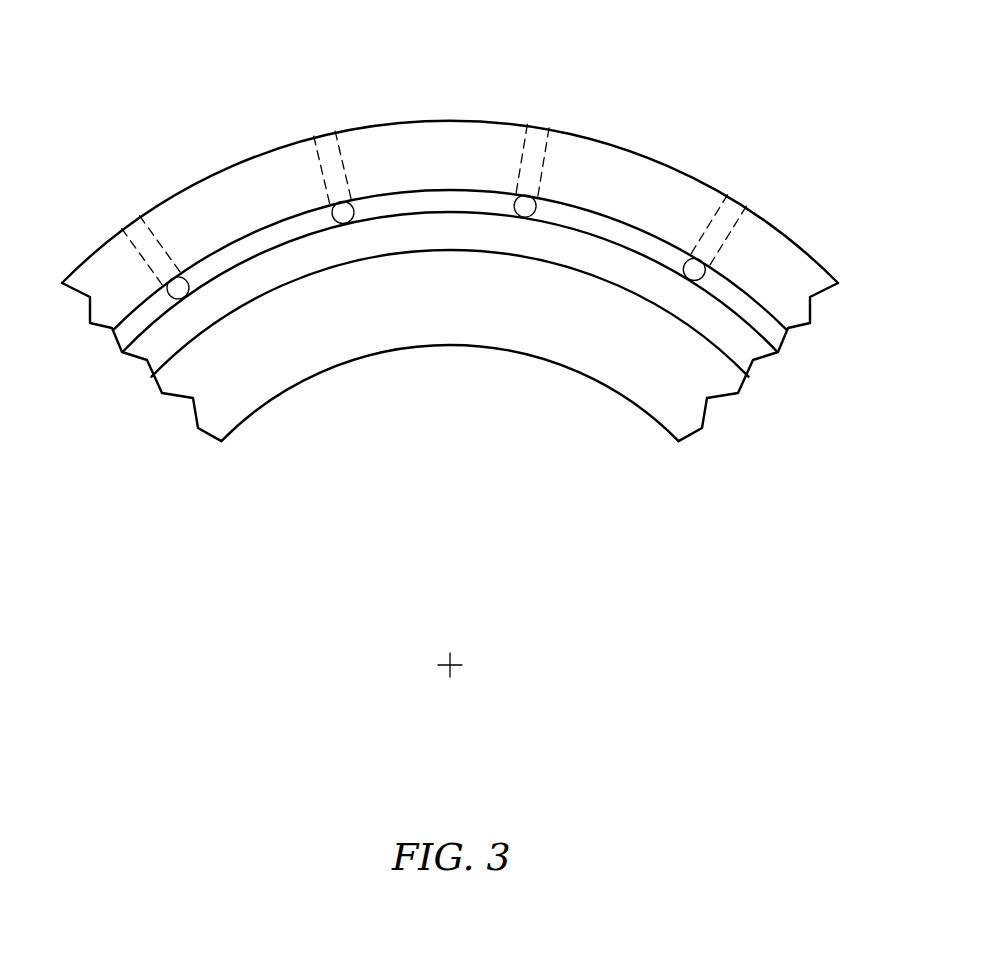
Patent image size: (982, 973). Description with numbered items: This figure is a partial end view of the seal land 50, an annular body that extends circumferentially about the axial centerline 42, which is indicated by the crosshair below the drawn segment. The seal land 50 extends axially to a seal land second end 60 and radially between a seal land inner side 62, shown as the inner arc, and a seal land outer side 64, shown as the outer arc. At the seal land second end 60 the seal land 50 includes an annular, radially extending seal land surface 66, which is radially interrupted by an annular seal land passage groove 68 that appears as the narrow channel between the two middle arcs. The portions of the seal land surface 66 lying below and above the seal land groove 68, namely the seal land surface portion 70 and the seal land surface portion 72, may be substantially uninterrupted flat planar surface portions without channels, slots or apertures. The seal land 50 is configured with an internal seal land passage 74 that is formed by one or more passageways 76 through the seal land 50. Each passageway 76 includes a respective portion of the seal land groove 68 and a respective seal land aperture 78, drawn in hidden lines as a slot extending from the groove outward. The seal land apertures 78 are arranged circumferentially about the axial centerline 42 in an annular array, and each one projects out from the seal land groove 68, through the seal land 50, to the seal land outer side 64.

The axial centerline 42 is at (456, 659).
The seal land 50 is at (464, 340).
The seal land second end 60 is at (85, 283).
The seal land inner side 62 is at (433, 348).
The seal land outer side 64 is at (431, 118).
The seal land surface 66 is at (793, 271).
The seal land passage groove 68 is at (785, 334).
The seal land surface portion 70 is at (793, 360).
The seal land surface portion 72 is at (857, 298).
The seal land passage 74 is at (232, 243).
The passageway 76 is at (161, 246).
The seal land aperture 78 is at (140, 262).